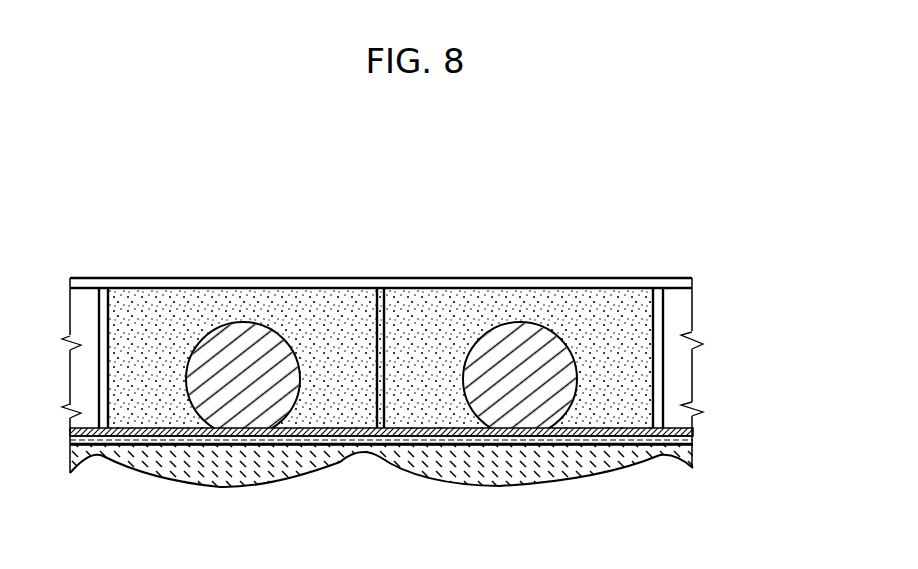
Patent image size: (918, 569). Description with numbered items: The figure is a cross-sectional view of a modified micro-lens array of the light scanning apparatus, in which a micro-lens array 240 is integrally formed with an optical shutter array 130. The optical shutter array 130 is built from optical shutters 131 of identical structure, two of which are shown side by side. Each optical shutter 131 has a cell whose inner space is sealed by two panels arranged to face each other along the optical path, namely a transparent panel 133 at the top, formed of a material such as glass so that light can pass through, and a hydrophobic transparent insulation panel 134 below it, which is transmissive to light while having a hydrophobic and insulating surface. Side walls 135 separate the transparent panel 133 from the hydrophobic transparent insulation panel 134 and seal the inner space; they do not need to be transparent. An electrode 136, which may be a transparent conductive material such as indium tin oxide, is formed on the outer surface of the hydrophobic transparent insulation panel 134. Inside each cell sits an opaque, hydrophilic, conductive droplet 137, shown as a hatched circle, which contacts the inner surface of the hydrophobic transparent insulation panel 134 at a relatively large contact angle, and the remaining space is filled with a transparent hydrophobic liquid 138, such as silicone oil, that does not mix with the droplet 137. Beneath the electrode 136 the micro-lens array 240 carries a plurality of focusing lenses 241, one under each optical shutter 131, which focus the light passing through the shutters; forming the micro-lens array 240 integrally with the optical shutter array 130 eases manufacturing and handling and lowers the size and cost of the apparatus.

The optical shutter array 130 is at (737, 272).
The optical shutter 131 is at (312, 275).
The transparent panel 133 is at (668, 282).
The hydrophobic transparent insulation panel 134 is at (693, 434).
The side wall 135 is at (657, 403).
The electrode 136 is at (693, 446).
The droplet 137 is at (540, 381).
The transparent hydrophobic liquid 138 is at (630, 318).
The micro-lens array 240 is at (678, 477).
The focusing lens 241 is at (225, 470).